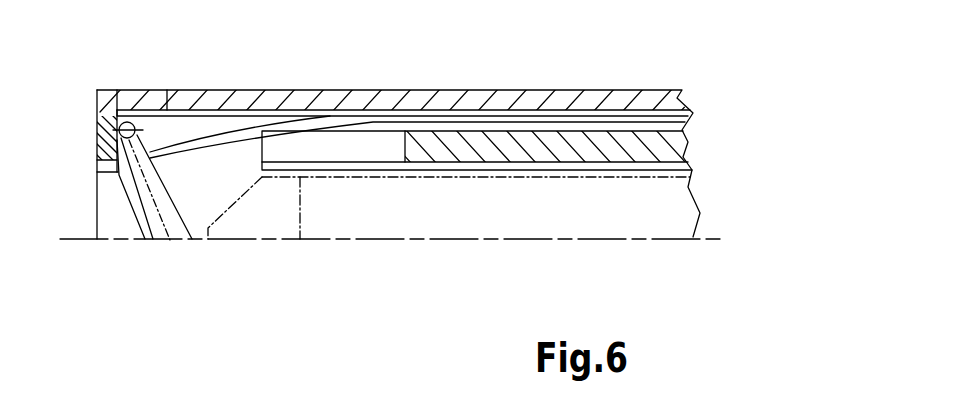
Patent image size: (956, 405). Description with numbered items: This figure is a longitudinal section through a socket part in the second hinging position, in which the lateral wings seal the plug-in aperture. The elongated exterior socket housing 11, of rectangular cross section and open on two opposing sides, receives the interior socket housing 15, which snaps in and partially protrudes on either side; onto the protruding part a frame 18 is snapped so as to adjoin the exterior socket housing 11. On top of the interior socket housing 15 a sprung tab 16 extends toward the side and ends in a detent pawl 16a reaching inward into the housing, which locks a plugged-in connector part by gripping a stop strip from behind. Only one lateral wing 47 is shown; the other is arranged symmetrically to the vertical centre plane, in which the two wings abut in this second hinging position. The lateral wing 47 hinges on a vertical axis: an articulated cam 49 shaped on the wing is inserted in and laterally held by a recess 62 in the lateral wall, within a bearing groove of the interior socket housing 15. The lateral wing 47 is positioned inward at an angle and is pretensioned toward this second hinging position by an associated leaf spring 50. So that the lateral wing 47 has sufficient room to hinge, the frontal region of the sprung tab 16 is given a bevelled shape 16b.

The exterior socket housing 11 is at (413, 100).
The interior socket housing 15 is at (663, 145).
The sprung tab 16 is at (515, 220).
The detent pawl 16a is at (272, 213).
The bevelled shape 16b is at (243, 196).
The frame 18 is at (102, 105).
The lateral wing 47 is at (158, 225).
The articulated cam 49 is at (126, 146).
The leaf spring 50 is at (242, 142).
The recess 62 is at (212, 172).